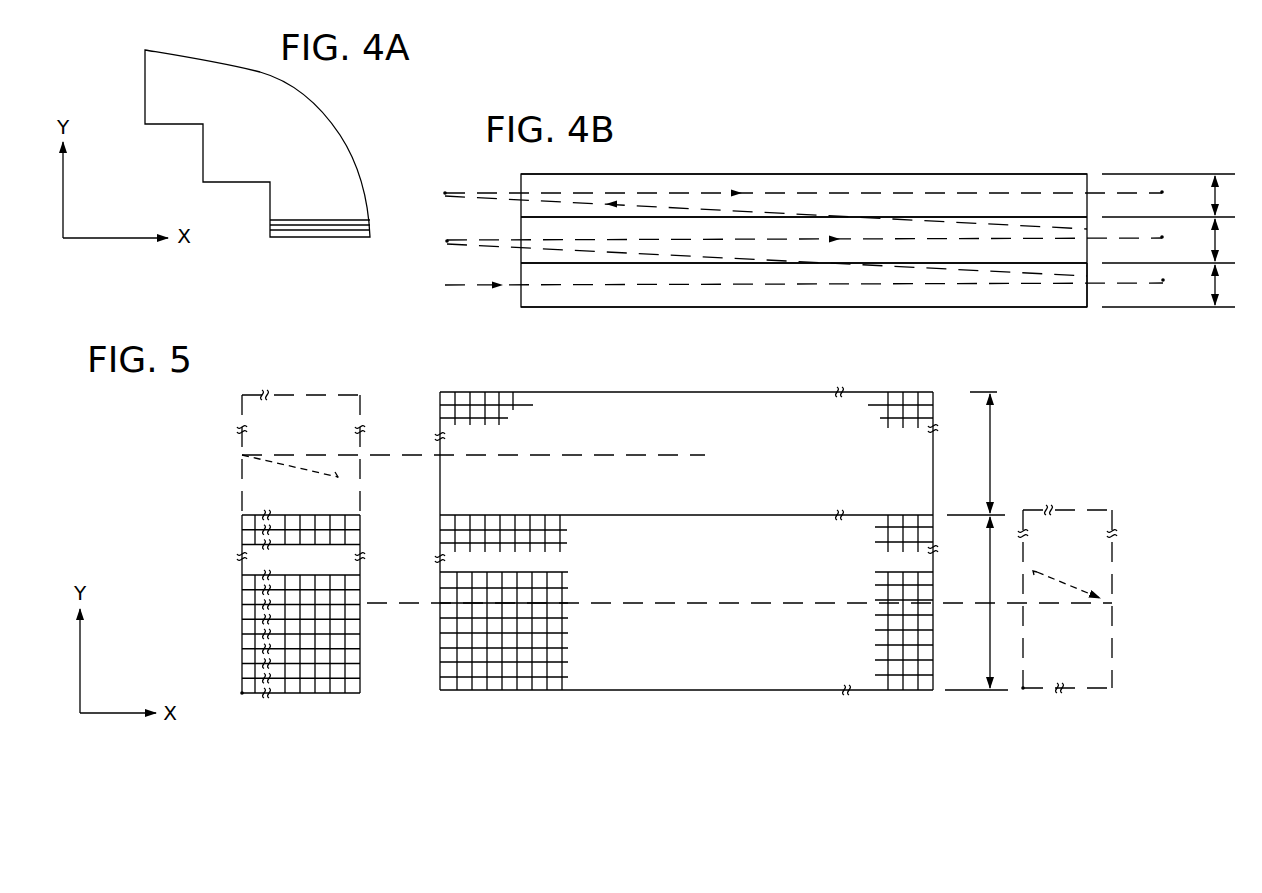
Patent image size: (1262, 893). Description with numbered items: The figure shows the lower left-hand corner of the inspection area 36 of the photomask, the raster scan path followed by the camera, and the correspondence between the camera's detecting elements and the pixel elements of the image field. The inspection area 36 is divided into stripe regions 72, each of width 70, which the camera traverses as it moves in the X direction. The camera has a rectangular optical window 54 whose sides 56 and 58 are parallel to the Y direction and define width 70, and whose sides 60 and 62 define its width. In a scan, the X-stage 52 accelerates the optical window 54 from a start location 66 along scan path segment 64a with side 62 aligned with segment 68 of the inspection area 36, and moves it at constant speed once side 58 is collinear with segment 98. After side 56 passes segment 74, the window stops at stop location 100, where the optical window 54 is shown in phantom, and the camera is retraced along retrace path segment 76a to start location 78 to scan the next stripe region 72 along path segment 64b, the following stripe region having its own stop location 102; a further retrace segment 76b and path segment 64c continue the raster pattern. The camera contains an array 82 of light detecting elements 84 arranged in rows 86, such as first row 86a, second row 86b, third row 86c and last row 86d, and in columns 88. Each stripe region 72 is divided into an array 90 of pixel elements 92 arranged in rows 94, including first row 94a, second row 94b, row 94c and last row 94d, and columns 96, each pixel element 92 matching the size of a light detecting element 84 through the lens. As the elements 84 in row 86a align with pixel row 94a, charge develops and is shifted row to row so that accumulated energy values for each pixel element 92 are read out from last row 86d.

In FIG. 4A, the inspection area 36 is at (153, 90).
In FIG. 4A, the stripe region 72 is at (270, 222).
In FIG. 4B, the stripe region 72 is at (1040, 182).
In FIG. 5, the stripe region 72 is at (930, 393).
In FIG. 4B, the width 70 is at (1217, 195).
In FIG. 5, the width 70 is at (990, 437).
In FIG. 4B, the stop location 102 is at (1162, 237).
In FIG. 4B, the stop location 100 is at (1163, 280).
In FIG. 5, the stop location 100 is at (1023, 690).
In FIG. 4B, the start location 78 is at (448, 243).
In FIG. 5, the start location 78 is at (242, 515).
In FIG. 4B, the start location 66 is at (447, 285).
In FIG. 5, the start location 66 is at (242, 693).
In FIG. 4B, the scan path segment 64a is at (745, 285).
In FIG. 5, the scan path segment 64a is at (388, 603).
In FIG. 4B, the path segment 64b is at (846, 284).
In FIG. 5, the path segment 64b is at (333, 452).
In FIG. 4B, the path segment 64c is at (770, 192).
In FIG. 4B, the retrace path segment 76a is at (913, 267).
In FIG. 5, the retrace path segment 76a is at (307, 468).
In FIG. 4B, the retrace path segment 76b is at (893, 220).
In FIG. 4B, the segment 74 is at (1088, 290).
In FIG. 5, the segment 74 is at (933, 650).
In FIG. 4B, the segment 68 is at (912, 307).
In FIG. 5, the segment 68 is at (687, 692).
In FIG. 5, the optical window 54 is at (297, 388).
In FIG. 5, the X-stage 52 is at (360, 551).
In FIG. 5, the side 56 is at (242, 583).
In FIG. 5, the side 58 is at (322, 570).
In FIG. 5, the side 60 is at (352, 515).
In FIG. 5, the side 62 is at (308, 693).
In FIG. 5, the array 82 is at (240, 626).
In FIG. 5, the light detecting element 84 is at (340, 640).
In FIG. 5, the row 86 is at (307, 506).
In FIG. 5, the first row 86a is at (355, 702).
In FIG. 5, the second row 86b is at (340, 702).
In FIG. 5, the third row 86c is at (325, 702).
In FIG. 5, the last row 86d is at (258, 702).
In FIG. 5, the column 88 is at (231, 685).
In FIG. 5, the array 90 is at (436, 628).
In FIG. 5, the pixel element 92 is at (523, 692).
In FIG. 5, the row 94 is at (492, 477).
In FIG. 5, the first row 94a is at (450, 699).
In FIG. 5, the second row 94b is at (465, 699).
In FIG. 5, the row 94c is at (480, 699).
In FIG. 5, the last row 94d is at (927, 695).
In FIG. 5, the column 96 is at (436, 685).
In FIG. 5, the segment 98 is at (438, 580).